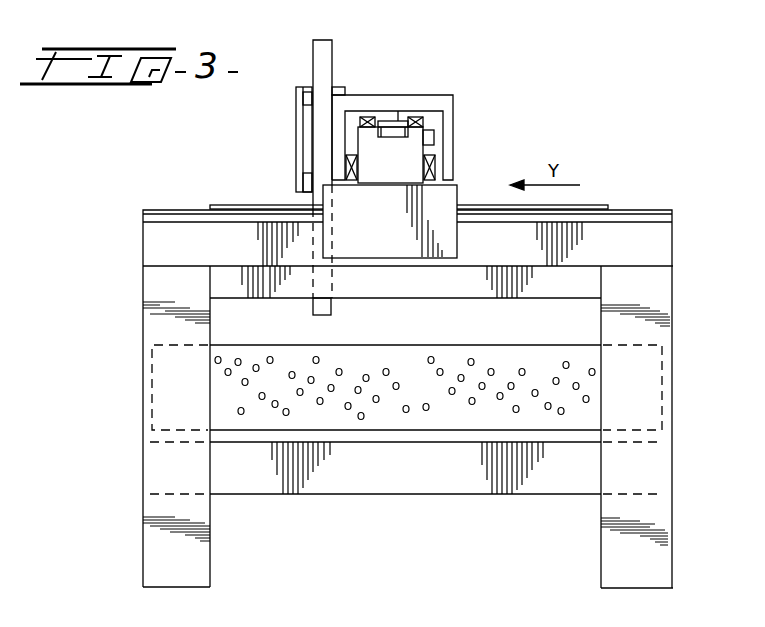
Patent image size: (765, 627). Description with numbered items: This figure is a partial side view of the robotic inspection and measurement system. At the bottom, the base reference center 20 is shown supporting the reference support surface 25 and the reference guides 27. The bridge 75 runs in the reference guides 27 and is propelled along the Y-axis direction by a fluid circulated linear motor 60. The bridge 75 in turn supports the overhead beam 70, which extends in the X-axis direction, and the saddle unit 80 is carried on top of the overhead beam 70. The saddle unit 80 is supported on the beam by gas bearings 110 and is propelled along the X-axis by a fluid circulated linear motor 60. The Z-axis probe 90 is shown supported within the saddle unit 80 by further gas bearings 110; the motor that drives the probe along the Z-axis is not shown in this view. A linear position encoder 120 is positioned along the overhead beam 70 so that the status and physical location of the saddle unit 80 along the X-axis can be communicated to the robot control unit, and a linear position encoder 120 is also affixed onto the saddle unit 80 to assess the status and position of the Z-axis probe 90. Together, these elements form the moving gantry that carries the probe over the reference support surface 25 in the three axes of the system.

The base reference center 20 is at (638, 482).
The reference support surface 25 is at (439, 398).
The reference guides 27 is at (243, 251).
The fluid circulated linear motor 60 is at (247, 205).
The overhead beam 70 is at (403, 175).
The bridge 75 is at (396, 231).
The saddle unit 80 is at (367, 95).
The Z-axis probe 90 is at (320, 41).
The gas bearings 110 is at (312, 88).
The linear position encoder 120 is at (435, 135).